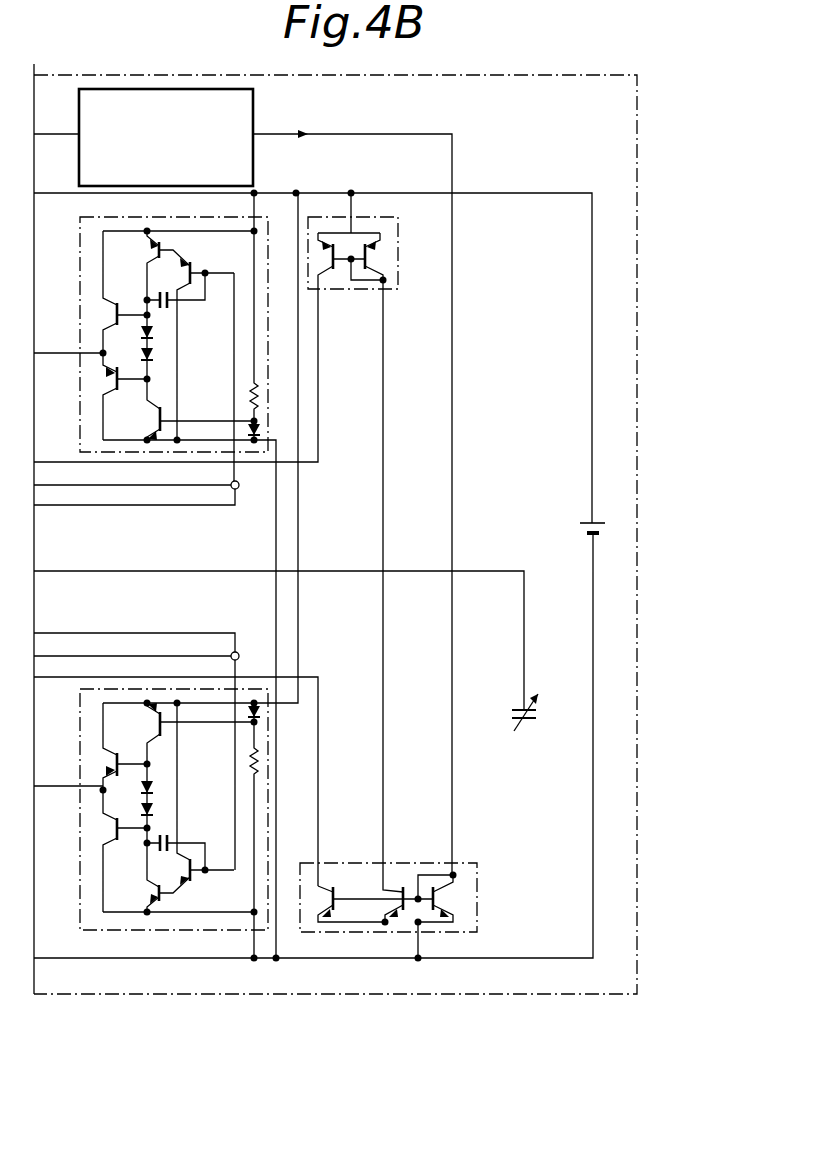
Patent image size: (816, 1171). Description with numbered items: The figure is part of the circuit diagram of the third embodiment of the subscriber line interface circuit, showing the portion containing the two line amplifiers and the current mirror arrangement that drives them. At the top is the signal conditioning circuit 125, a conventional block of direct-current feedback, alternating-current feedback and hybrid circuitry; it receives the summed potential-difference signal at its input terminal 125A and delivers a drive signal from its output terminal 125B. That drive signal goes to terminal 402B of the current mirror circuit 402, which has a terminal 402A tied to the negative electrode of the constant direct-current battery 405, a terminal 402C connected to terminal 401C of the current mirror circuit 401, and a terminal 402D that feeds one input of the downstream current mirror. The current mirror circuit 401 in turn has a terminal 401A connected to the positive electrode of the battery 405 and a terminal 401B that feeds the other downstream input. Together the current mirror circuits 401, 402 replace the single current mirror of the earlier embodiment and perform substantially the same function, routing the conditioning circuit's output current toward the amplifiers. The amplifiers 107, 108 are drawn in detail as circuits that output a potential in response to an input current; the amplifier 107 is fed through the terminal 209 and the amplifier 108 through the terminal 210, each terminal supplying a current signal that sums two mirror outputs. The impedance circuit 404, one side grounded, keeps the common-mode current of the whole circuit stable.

The amplifier 107 is at (78, 282).
The amplifier 108 is at (143, 932).
The signal conditioning circuit 125 is at (258, 97).
The input terminal 125A is at (78, 128).
The output terminal 125B is at (257, 140).
The terminal 209 is at (238, 489).
The terminal 210 is at (239, 652).
The current mirror circuit 401 is at (376, 526).
The terminal 401A is at (355, 212).
The terminal 401B is at (312, 293).
The terminal 401C is at (388, 293).
The current mirror circuit 402 is at (408, 906).
The terminal 402A is at (423, 935).
The terminal 402B is at (457, 860).
The terminal 402C is at (391, 860).
The terminal 402D is at (323, 860).
The impedance circuit 404 is at (535, 717).
The direct-current battery 405 is at (580, 530).